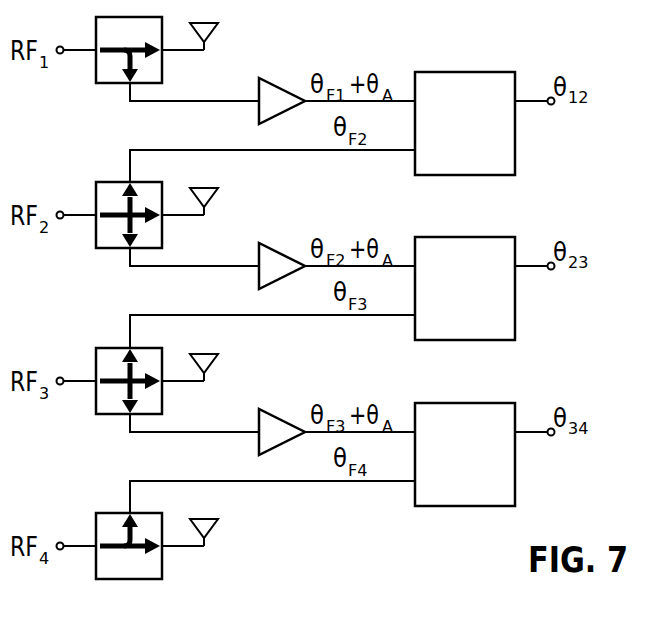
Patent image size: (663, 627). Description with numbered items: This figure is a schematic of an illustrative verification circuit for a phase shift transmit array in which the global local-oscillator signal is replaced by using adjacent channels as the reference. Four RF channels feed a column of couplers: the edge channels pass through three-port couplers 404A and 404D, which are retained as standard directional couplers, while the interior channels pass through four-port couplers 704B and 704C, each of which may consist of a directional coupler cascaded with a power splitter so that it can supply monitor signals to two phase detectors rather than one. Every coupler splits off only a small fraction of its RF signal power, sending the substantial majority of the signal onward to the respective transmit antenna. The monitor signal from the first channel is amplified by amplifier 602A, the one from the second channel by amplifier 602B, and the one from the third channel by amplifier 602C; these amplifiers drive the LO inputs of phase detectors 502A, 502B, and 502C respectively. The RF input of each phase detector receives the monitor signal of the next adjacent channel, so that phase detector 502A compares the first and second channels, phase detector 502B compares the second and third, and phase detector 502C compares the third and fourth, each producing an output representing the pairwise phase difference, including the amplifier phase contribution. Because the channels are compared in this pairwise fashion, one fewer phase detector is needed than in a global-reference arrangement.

The 3-port coupler 404A is at (108, 84).
The 4-port coupler 704B is at (108, 249).
The 4-port coupler 704C is at (108, 415).
The 3-port coupler 404D is at (108, 580).
The amplifier 602A is at (280, 72).
The amplifier 602B is at (280, 237).
The amplifier 602C is at (280, 403).
The phase detector 502A is at (467, 72).
The phase detector 502B is at (467, 237).
The phase detector 502C is at (467, 403).